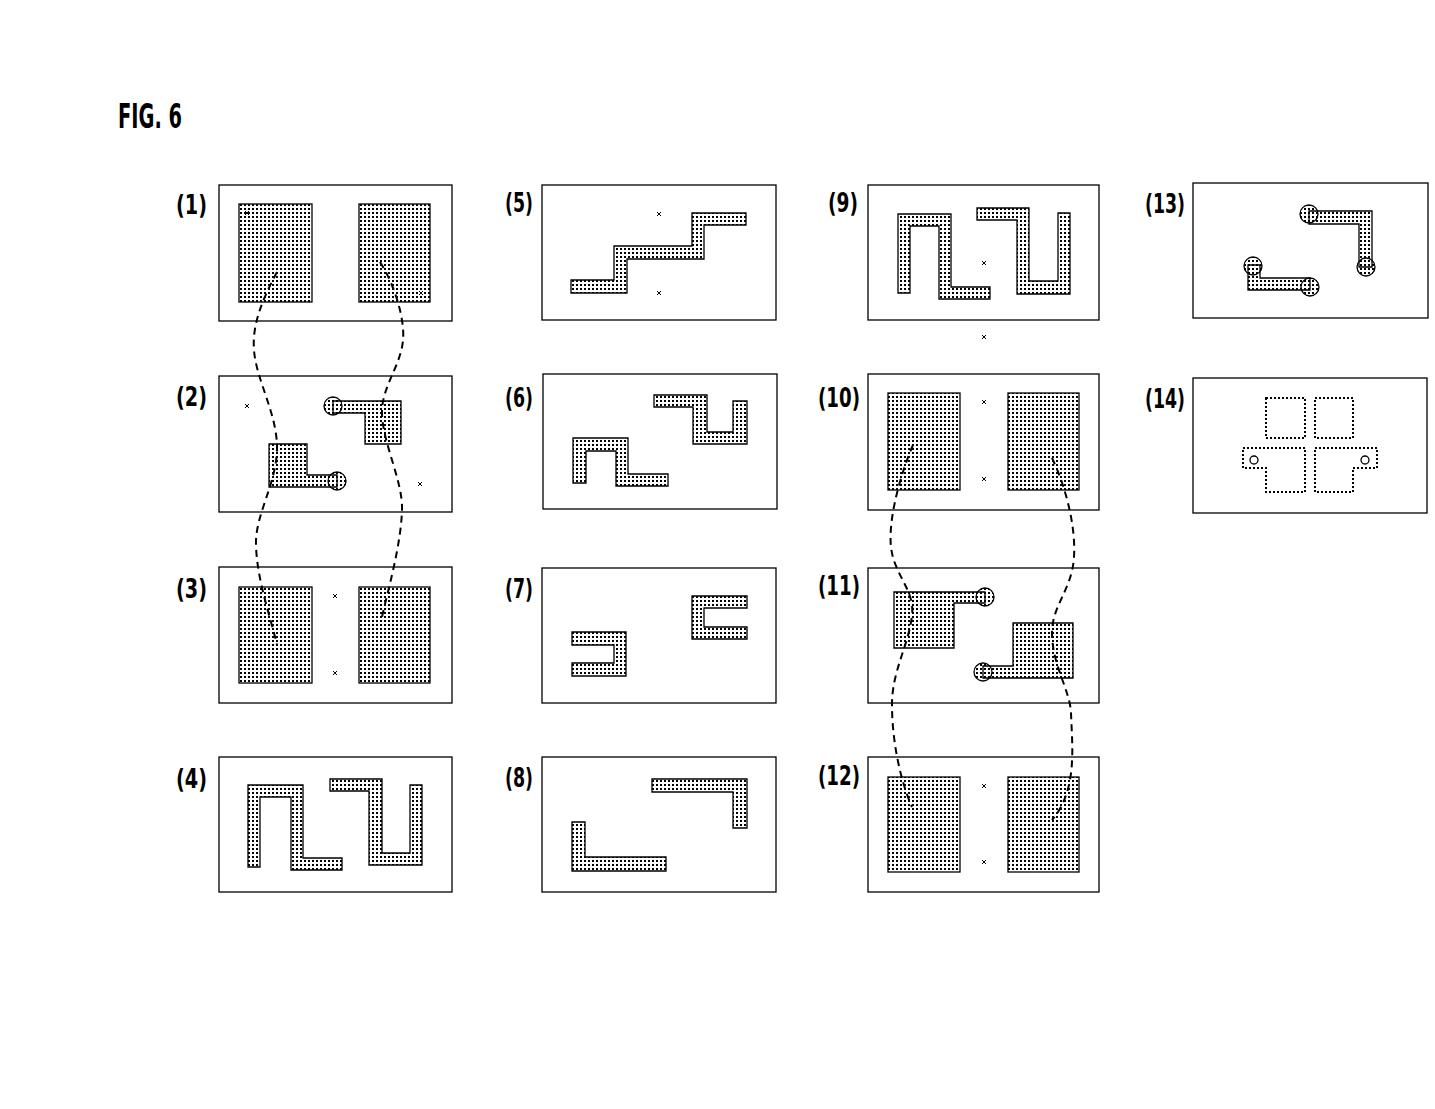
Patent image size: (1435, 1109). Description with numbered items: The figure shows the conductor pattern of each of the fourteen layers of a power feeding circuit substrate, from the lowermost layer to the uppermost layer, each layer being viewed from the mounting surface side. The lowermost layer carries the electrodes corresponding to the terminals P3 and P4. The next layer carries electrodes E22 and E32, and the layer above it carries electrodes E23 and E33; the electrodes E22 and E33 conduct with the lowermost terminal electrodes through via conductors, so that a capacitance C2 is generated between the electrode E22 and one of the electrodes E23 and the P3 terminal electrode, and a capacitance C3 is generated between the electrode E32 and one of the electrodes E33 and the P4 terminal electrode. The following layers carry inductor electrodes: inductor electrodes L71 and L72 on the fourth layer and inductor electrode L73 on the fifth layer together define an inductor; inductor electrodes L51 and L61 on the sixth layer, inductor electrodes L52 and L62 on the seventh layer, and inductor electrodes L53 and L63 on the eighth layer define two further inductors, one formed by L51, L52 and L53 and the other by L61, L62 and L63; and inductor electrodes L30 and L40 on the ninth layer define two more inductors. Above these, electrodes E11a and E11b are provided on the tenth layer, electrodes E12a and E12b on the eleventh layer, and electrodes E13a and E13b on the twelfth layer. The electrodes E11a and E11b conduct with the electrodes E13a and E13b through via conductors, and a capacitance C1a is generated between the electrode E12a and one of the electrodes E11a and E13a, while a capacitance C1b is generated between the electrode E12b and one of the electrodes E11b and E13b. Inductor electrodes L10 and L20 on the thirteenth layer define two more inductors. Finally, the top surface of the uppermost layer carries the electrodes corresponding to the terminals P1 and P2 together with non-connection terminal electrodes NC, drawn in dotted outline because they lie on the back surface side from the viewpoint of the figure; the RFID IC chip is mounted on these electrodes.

The capacitance C2 is at (392, 333).
The capacitance C3 is at (262, 367).
The capacitance C1a is at (903, 535).
The capacitance C1b is at (1063, 540).
The electrode E32 is at (282, 465).
The electrode E22 is at (390, 430).
The electrode E33 is at (253, 643).
The electrode E23 is at (417, 643).
The electrode E11a is at (902, 438).
The electrode E11b is at (1065, 438).
The electrode E12a is at (903, 622).
The electrode E12b is at (1060, 648).
The electrode E13a is at (903, 827).
The electrode E13b is at (1063, 833).
The inductor electrode L72 is at (253, 828).
The inductor electrode L71 is at (417, 828).
The inductor electrode L73 is at (708, 218).
The inductor electrode L51 is at (699, 398).
The inductor electrode L61 is at (625, 480).
The inductor electrode L62 is at (610, 637).
The inductor electrode L52 is at (718, 598).
The inductor electrode L53 is at (705, 785).
The inductor electrode L63 is at (622, 867).
The inductor electrode L30 is at (925, 218).
The inductor electrode L40 is at (1026, 210).
The inductor electrode L10 is at (1353, 213).
The inductor electrode L20 is at (1288, 282).
The non-connection terminal electrode NC is at (1287, 407).